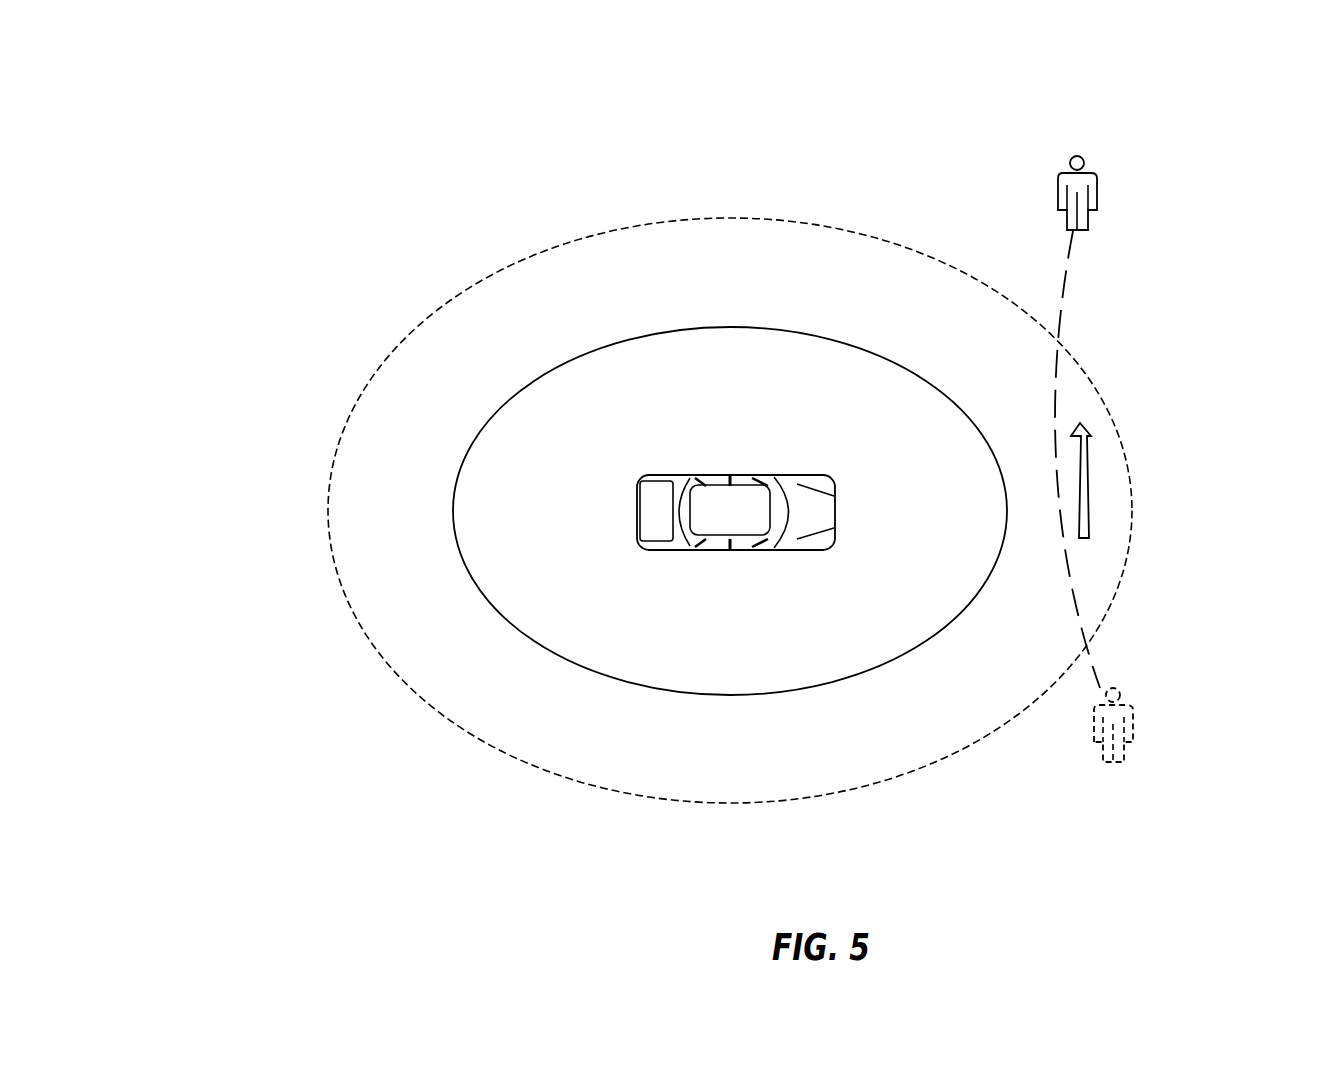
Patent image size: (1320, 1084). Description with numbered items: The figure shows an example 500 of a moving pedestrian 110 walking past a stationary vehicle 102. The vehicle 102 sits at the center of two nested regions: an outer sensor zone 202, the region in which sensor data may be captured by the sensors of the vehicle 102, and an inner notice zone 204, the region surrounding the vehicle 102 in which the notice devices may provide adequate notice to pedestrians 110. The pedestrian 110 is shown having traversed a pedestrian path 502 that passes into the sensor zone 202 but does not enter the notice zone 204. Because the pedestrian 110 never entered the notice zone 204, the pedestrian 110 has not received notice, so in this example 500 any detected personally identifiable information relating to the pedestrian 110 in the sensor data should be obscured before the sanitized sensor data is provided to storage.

The example 500 is at (290, 72).
The vehicle 102 is at (717, 521).
The pedestrian 110 is at (1165, 218).
The sensor zone 202 is at (890, 240).
The notice zone 204 is at (597, 347).
The pedestrian path 502 is at (1093, 668).